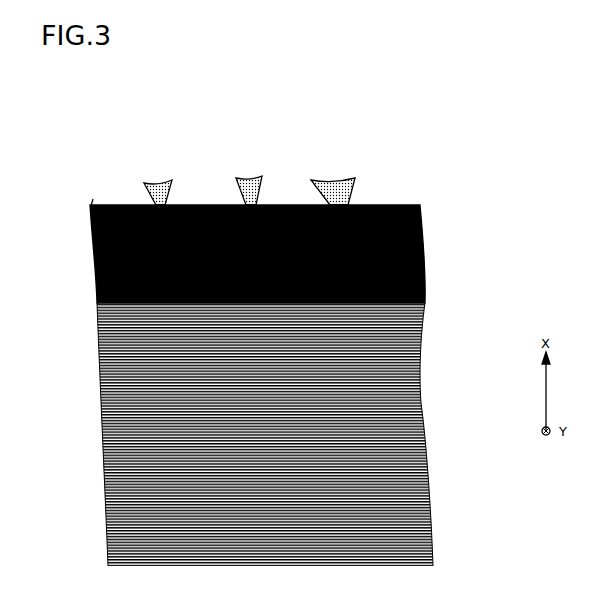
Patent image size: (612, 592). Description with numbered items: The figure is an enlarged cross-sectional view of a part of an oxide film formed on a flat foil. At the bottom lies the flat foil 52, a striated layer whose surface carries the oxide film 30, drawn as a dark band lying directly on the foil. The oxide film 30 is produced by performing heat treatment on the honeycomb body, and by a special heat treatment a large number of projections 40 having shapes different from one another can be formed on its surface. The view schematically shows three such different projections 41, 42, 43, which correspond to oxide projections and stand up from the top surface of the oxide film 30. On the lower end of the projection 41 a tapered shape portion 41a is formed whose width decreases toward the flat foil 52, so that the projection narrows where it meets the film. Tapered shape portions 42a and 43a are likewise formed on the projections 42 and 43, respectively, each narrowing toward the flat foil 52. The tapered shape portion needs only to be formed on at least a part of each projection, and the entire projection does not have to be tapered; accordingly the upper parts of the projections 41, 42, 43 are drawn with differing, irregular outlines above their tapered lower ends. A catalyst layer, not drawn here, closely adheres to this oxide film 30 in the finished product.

The oxide film 30 is at (257, 258).
The projections 40 is at (293, 110).
The projection 41 is at (329, 190).
The projection 42 is at (242, 190).
The projection 43 is at (152, 190).
The tapered shape portion 41a is at (322, 193).
The tapered shape portion 42a is at (232, 193).
The tapered shape portion 43a is at (147, 193).
The flat foil 52 is at (252, 424).